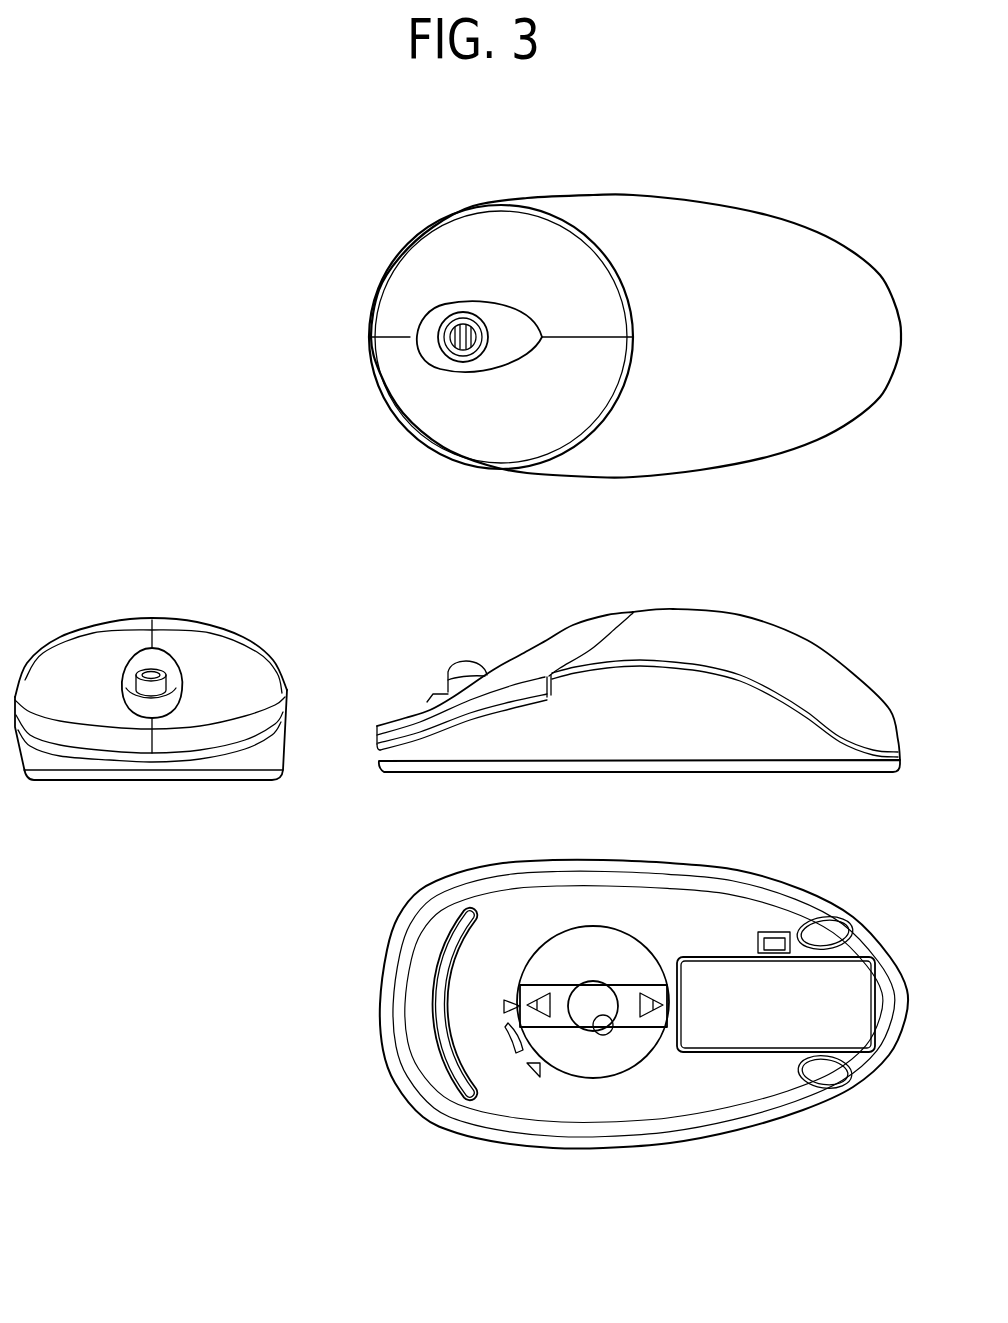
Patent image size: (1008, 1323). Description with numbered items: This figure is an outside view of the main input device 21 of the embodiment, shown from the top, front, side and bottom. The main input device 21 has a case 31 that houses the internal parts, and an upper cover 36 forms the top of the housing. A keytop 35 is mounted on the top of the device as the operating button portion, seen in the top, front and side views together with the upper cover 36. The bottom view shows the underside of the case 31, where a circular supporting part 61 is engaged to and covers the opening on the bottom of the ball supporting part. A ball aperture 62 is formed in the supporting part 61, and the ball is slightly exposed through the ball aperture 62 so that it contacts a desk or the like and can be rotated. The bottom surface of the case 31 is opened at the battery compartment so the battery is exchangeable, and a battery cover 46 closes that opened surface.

The main input device 21 is at (94, 159).
The keytop 35 is at (413, 373).
The upper cover 36 is at (738, 243).
The case 31 is at (110, 772).
The battery cover 46 is at (753, 1032).
The supporting part 61 is at (607, 1060).
The ball aperture 62 is at (617, 1027).